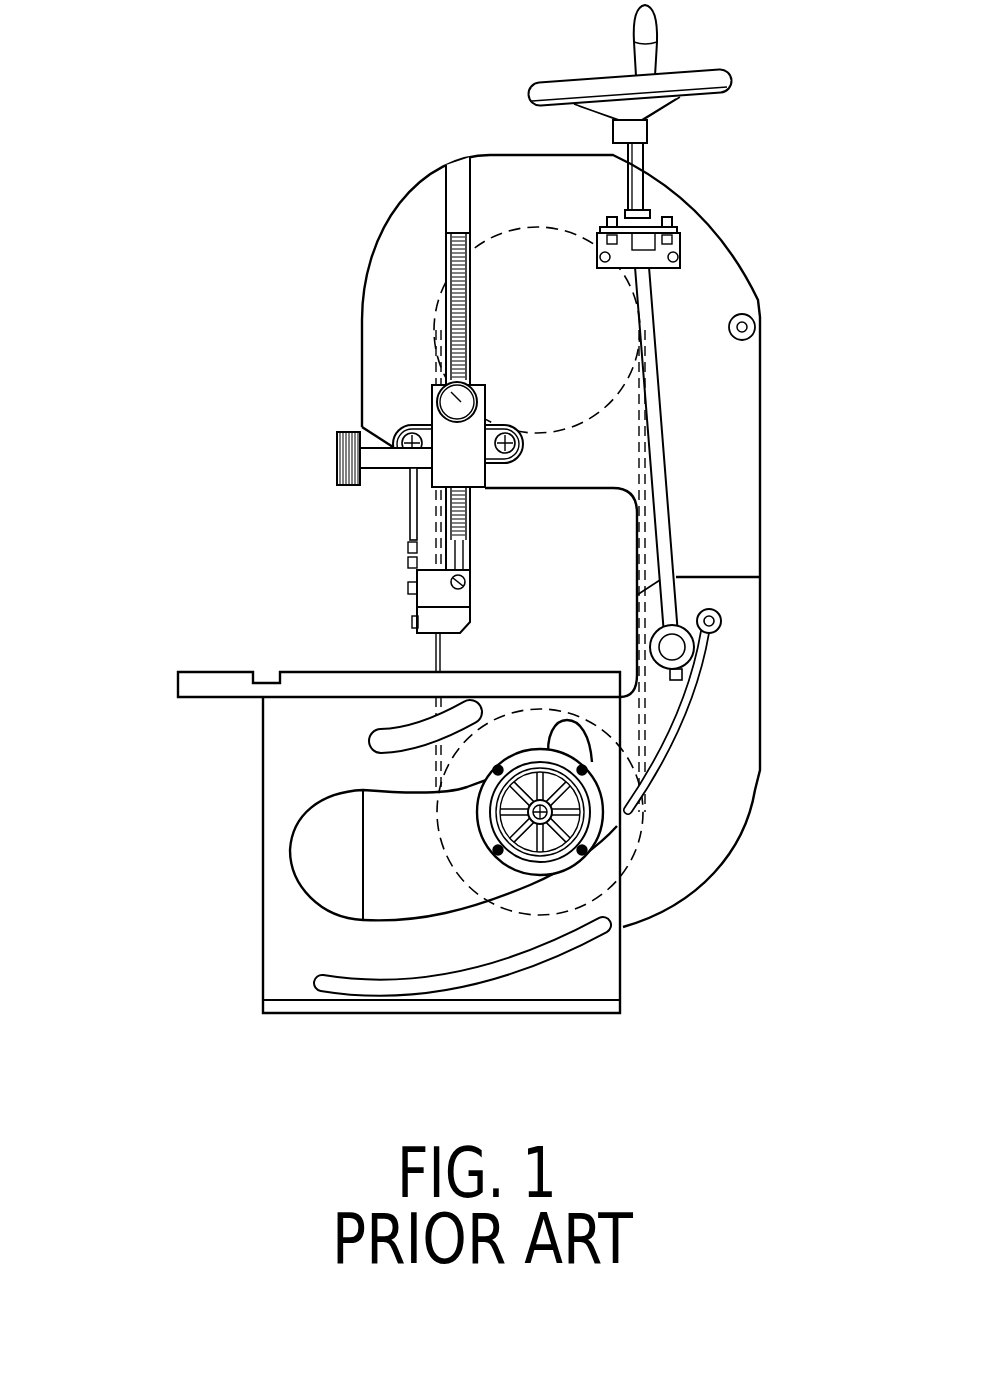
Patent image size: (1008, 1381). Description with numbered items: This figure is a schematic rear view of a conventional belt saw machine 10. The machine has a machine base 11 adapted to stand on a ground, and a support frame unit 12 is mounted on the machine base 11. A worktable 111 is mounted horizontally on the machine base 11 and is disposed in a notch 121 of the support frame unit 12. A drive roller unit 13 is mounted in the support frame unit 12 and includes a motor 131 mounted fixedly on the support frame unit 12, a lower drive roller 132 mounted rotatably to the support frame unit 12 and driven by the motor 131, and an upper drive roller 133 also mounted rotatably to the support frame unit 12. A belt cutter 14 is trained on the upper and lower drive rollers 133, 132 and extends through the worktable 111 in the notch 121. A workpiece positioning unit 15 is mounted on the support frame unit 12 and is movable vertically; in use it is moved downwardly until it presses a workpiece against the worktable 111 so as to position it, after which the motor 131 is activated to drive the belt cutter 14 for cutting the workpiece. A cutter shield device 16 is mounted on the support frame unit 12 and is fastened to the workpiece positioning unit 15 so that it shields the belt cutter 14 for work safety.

The belt saw machine 10 is at (738, 250).
The machine base 11 is at (263, 921).
The worktable 111 is at (187, 684).
The support frame unit 12 is at (762, 383).
The notch 121 is at (607, 533).
The drive roller unit 13 is at (597, 853).
The motor 131 is at (597, 833).
The lower drive roller 132 is at (643, 812).
The upper drive roller 133 is at (512, 240).
The belt cutter 14 is at (437, 650).
The workpiece positioning unit 15 is at (470, 587).
The cutter shield device 16 is at (420, 507).